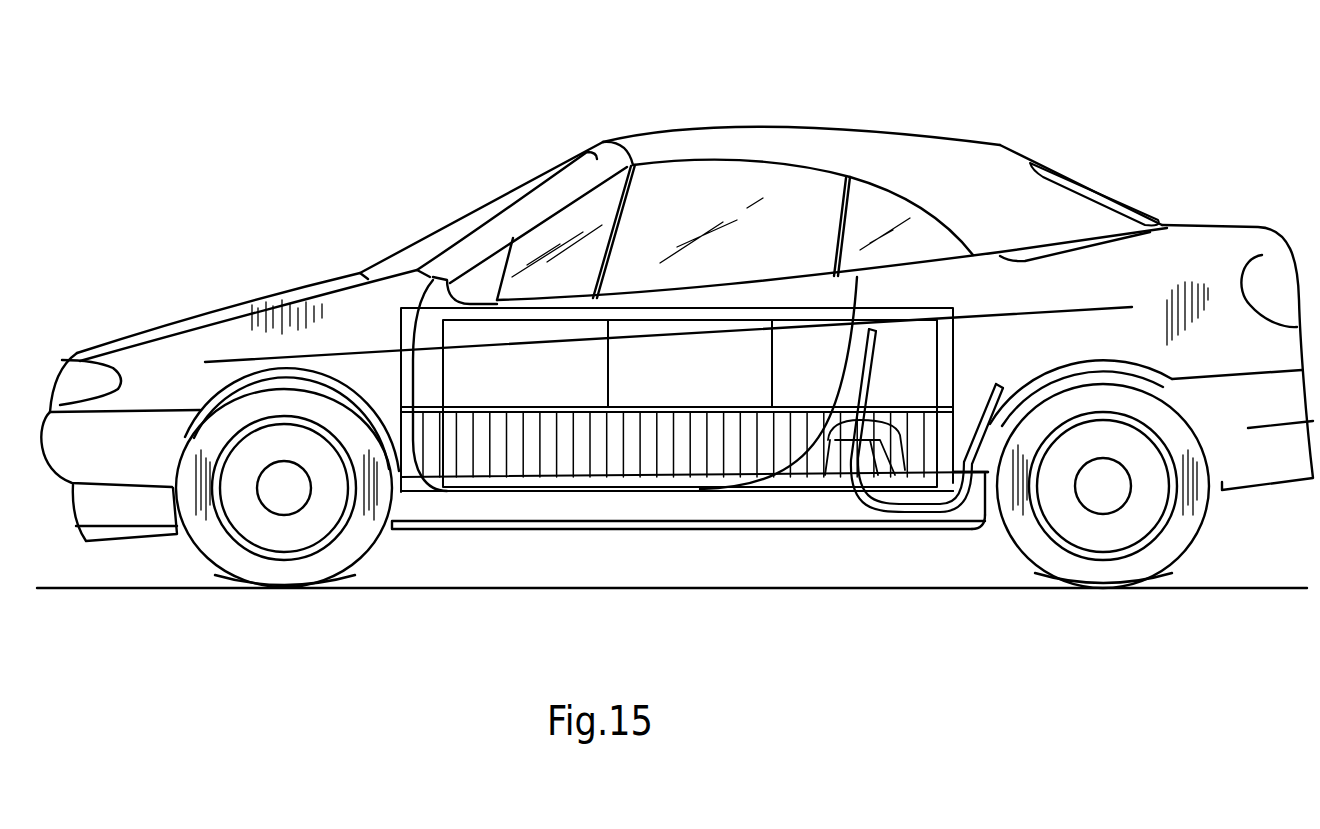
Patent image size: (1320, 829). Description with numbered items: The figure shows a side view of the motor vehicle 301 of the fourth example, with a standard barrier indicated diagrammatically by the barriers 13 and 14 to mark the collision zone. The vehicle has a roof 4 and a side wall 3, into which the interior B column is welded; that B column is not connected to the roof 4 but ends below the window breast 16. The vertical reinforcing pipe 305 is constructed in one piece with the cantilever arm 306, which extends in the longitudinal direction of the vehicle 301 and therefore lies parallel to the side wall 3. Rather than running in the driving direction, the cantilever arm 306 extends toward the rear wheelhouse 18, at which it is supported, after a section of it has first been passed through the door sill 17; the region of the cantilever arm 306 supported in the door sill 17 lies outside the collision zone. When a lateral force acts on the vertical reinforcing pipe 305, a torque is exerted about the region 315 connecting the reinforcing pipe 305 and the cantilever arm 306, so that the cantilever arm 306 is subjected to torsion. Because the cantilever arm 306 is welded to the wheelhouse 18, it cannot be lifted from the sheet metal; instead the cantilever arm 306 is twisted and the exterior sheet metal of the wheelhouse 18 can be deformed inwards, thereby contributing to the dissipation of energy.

The side wall 3 is at (1028, 356).
The roof 4 is at (972, 195).
The barrier 13 is at (435, 305).
The barrier 14 is at (471, 320).
The window breast 16 is at (893, 263).
The door sill 17 is at (960, 505).
The rear wheelhouse 18 is at (1070, 358).
The motor vehicle 301 is at (1115, 148).
The reinforcing pipe 305 is at (840, 437).
The cantilever arm 306 is at (968, 478).
The connecting region 315 is at (857, 500).